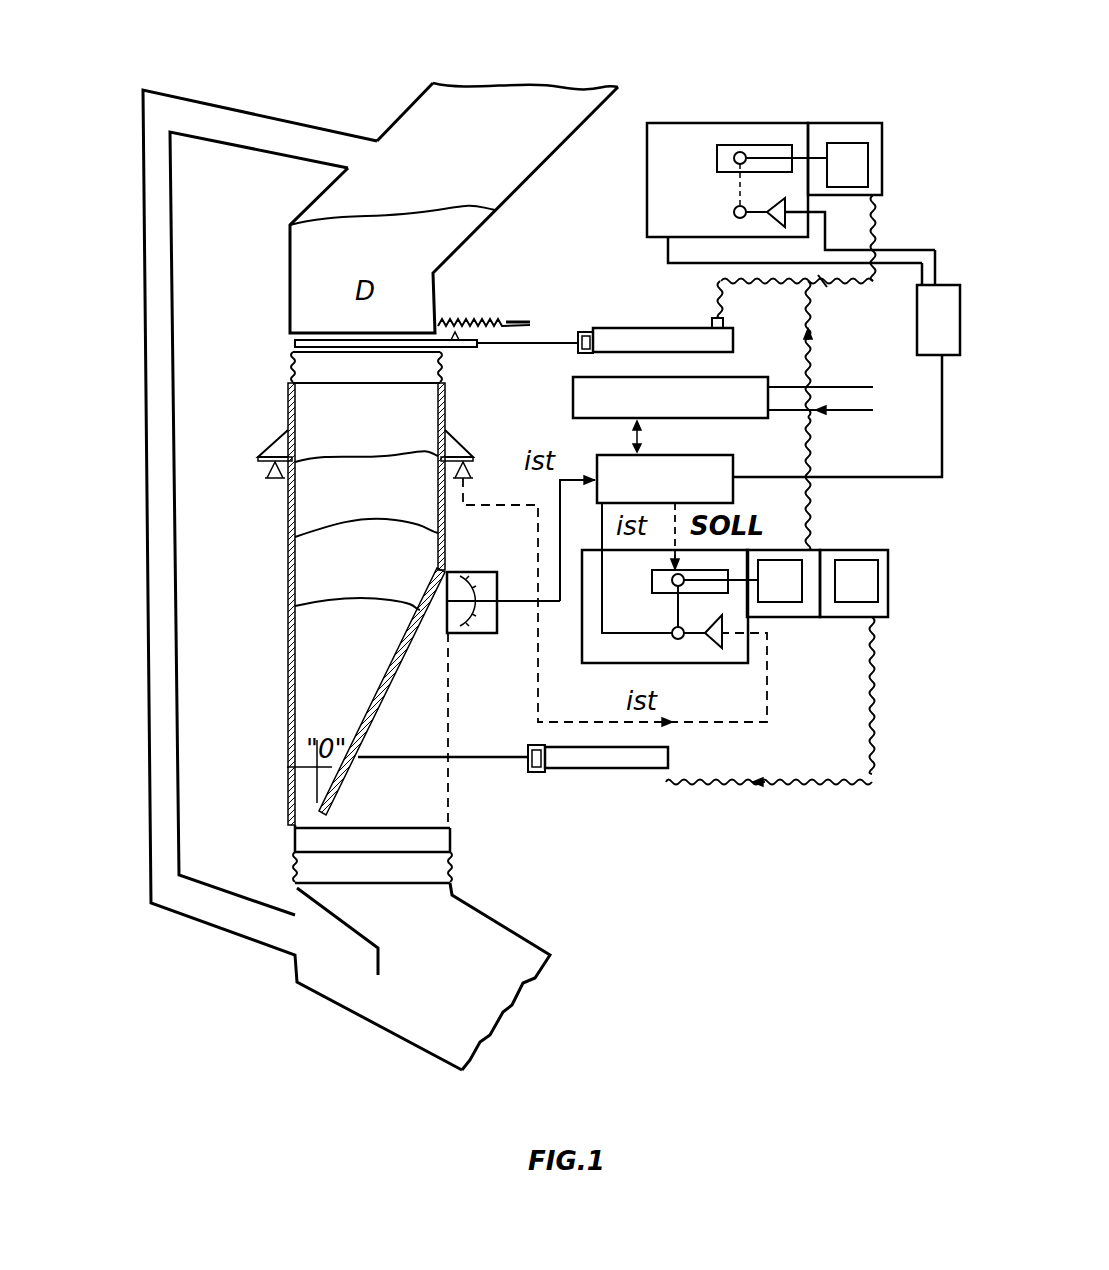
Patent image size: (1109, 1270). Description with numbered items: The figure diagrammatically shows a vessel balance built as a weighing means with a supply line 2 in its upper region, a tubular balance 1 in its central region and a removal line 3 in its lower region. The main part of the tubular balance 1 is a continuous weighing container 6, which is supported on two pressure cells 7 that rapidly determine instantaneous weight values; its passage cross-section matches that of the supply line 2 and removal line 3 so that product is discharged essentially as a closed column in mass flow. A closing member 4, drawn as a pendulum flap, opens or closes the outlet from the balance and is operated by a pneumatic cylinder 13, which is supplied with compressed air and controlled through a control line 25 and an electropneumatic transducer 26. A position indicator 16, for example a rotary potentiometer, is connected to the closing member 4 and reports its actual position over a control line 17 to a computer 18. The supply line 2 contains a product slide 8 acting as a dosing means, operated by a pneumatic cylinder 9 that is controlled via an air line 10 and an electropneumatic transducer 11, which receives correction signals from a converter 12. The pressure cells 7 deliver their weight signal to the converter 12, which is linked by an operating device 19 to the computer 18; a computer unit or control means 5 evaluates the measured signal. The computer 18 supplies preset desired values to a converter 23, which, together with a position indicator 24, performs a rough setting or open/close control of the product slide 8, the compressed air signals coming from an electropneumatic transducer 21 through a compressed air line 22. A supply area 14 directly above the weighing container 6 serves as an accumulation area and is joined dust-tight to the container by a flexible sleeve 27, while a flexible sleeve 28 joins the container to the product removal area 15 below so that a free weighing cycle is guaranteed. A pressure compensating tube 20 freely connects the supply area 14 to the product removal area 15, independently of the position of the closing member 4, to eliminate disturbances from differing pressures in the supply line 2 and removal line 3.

The tubular balance 1 is at (288, 570).
The supply line 2 is at (502, 178).
The removal line 3 is at (360, 1003).
The closing member 4 is at (390, 673).
The computer unit and/or control means 5 is at (806, 497).
The weighing container 6 is at (445, 405).
The pressure cells 7 is at (265, 472).
The product slide 8 is at (456, 340).
The pneumatic cylinder 9 is at (670, 328).
The air line 10 is at (815, 343).
The electropneumatic transducer 11 is at (785, 610).
The converter 12 is at (682, 650).
The pneumatic cylinder 13 is at (578, 760).
The supply area 14 is at (413, 123).
The product removal area 15 is at (315, 868).
The position indicator 16 is at (470, 633).
The control line 17 is at (564, 492).
The computer 18 is at (713, 460).
The operating device 19 is at (578, 395).
The pressure compensating tube 20 is at (157, 218).
The electropneumatic transducer 21 is at (882, 160).
The compressed air line 22 is at (888, 222).
The converter 23 is at (692, 132).
The position indicator 24 is at (494, 318).
The control line 25 is at (718, 792).
The electropneumatic transducer 26 is at (888, 600).
The flexible sleeve 27 is at (277, 367).
The flexible sleeve 28 is at (288, 858).